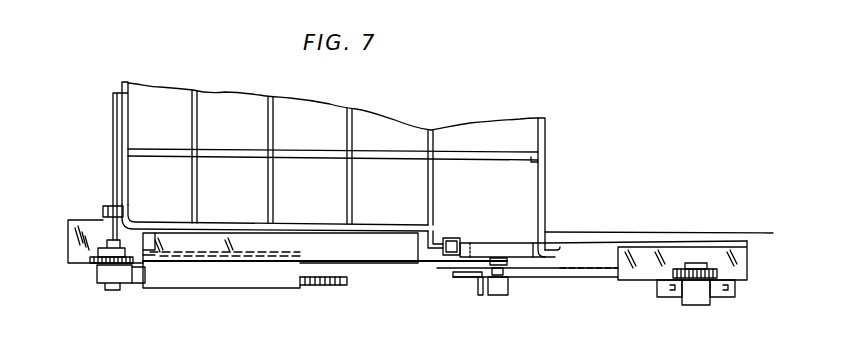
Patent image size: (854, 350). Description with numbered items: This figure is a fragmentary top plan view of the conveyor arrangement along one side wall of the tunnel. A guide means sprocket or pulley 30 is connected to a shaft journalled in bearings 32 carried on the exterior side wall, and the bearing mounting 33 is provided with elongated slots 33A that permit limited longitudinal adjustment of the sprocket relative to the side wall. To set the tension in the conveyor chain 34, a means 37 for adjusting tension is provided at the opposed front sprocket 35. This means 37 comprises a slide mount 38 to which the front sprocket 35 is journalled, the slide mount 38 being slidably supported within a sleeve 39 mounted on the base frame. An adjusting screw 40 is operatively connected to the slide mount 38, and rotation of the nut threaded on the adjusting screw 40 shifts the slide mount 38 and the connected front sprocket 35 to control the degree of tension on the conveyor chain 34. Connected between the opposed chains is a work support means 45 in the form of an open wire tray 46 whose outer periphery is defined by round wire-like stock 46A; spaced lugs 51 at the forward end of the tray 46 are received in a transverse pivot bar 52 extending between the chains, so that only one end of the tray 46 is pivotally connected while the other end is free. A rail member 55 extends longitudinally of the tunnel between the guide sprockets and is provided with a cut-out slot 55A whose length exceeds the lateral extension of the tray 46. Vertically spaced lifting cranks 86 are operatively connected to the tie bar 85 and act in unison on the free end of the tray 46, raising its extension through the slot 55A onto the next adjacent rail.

The sprocket or pulley 30 is at (715, 267).
The bearings 32 is at (690, 297).
The bearing mounting 33 is at (735, 290).
The elongated slots 33A is at (655, 283).
The conveyor chain 34 is at (150, 267).
The front sprocket 35 is at (92, 262).
The means for adjusting tension 37 is at (237, 300).
The slide mount 38 is at (100, 268).
The sleeve 39 is at (197, 284).
The adjusting screw 40 is at (313, 287).
The work support means 45 is at (552, 159).
The tray 46 is at (545, 128).
The wire-like stock 46A is at (550, 250).
The lugs 51 is at (103, 210).
The transverse pivot bar 52 is at (112, 136).
The rail member 55 is at (635, 250).
The slot 55A is at (440, 262).
The tie bar 85 is at (502, 258).
The lifting crank 86 is at (459, 240).